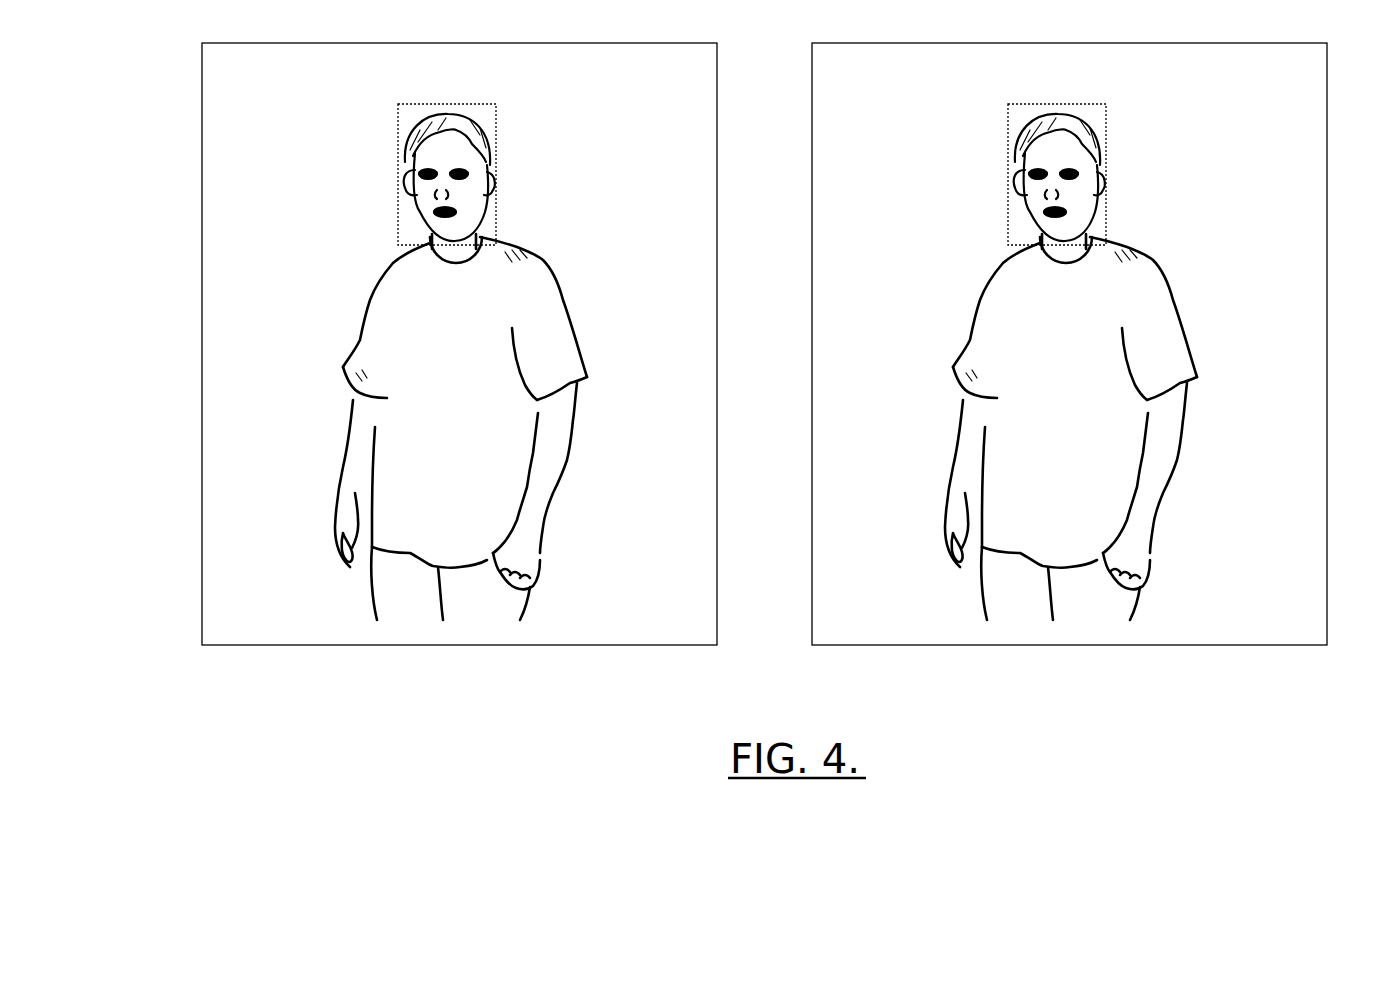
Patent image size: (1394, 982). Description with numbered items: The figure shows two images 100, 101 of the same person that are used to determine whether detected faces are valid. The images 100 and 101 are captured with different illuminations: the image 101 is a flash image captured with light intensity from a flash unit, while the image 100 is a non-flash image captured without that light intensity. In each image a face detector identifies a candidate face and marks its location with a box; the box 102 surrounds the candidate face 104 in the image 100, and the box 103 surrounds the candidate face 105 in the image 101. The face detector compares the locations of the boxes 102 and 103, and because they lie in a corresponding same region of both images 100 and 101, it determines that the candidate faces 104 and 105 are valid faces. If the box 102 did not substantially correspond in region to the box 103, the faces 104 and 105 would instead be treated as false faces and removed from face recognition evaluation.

The image 100 is at (718, 335).
The image 101 is at (1328, 335).
The box 102 is at (498, 126).
The box 103 is at (1108, 120).
The candidate face 104 is at (422, 209).
The candidate face 105 is at (1032, 212).